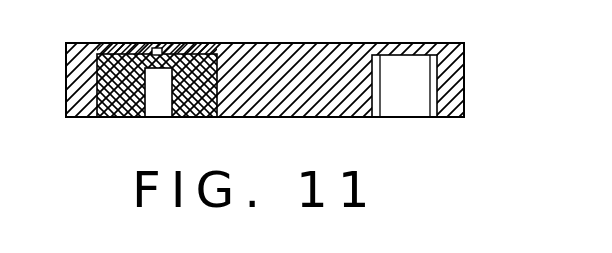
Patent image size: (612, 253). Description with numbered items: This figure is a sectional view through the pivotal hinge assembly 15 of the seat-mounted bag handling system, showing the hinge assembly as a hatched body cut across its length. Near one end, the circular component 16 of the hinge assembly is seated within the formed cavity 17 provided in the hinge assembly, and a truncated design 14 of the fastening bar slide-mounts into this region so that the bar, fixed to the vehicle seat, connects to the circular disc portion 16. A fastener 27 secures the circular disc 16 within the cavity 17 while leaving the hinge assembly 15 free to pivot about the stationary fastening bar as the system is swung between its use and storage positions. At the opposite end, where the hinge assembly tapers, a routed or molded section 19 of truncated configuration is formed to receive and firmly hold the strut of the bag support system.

The pivotal hinge assembly 15 is at (292, 43).
The formed cavity 17 is at (77, 87).
The circular component 16 is at (113, 101).
The truncated design 14 is at (157, 105).
The fastener 27 is at (156, 50).
The routed or molded section 19 is at (409, 105).